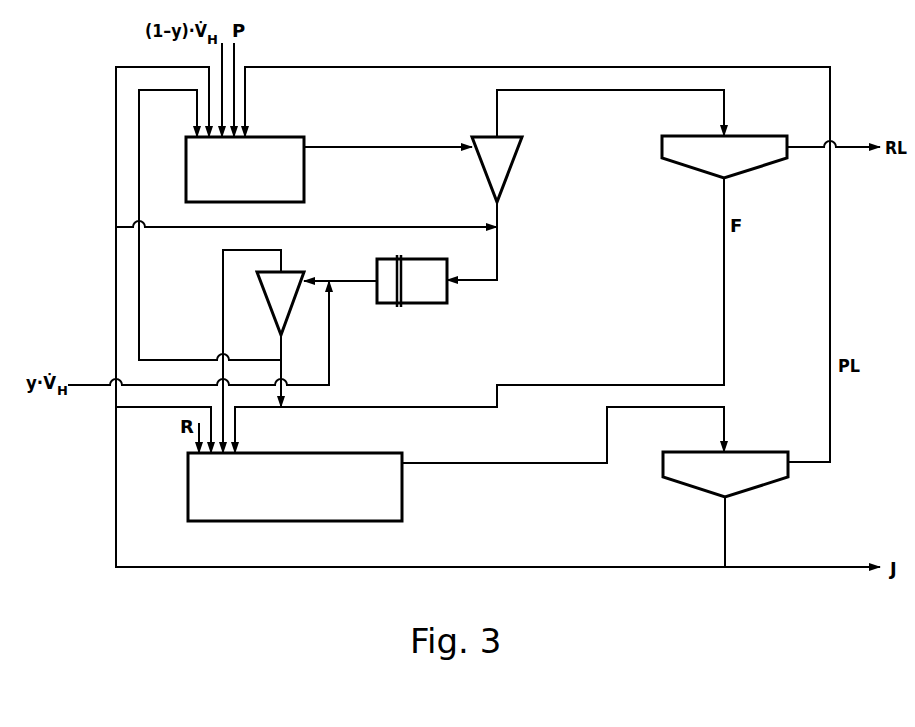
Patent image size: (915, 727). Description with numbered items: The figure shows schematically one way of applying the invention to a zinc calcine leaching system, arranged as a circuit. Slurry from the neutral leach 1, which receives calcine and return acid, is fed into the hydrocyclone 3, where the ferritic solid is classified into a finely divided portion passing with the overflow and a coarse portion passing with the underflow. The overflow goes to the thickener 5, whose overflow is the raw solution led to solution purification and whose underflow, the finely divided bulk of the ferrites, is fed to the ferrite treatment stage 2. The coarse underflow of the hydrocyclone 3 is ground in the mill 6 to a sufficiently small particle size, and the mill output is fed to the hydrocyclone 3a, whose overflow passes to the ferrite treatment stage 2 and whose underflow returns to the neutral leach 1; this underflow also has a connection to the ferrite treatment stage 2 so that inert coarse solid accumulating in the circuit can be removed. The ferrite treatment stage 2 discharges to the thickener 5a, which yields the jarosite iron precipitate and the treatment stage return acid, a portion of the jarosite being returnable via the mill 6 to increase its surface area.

The neutral leach 1 is at (245, 169).
The ferrite treatment stage 2 is at (295, 487).
The hydrocyclone 3 is at (497, 169).
The hydrocyclone 3a is at (280, 303).
The thickener 5 is at (724, 157).
The thickener 5a is at (725, 474).
The mill 6 is at (412, 281).